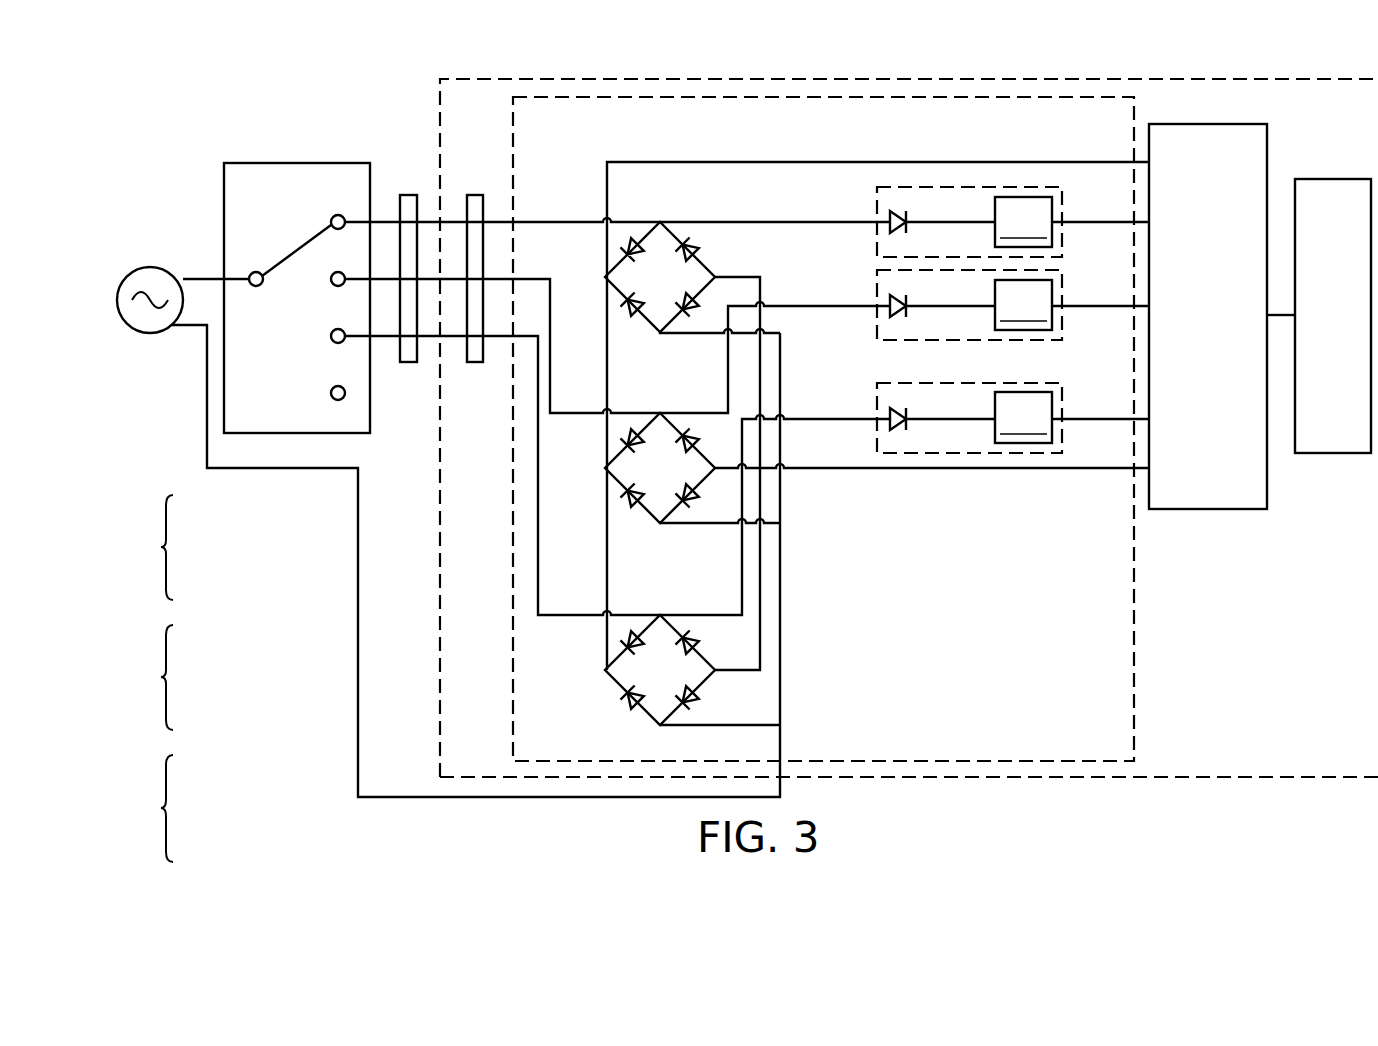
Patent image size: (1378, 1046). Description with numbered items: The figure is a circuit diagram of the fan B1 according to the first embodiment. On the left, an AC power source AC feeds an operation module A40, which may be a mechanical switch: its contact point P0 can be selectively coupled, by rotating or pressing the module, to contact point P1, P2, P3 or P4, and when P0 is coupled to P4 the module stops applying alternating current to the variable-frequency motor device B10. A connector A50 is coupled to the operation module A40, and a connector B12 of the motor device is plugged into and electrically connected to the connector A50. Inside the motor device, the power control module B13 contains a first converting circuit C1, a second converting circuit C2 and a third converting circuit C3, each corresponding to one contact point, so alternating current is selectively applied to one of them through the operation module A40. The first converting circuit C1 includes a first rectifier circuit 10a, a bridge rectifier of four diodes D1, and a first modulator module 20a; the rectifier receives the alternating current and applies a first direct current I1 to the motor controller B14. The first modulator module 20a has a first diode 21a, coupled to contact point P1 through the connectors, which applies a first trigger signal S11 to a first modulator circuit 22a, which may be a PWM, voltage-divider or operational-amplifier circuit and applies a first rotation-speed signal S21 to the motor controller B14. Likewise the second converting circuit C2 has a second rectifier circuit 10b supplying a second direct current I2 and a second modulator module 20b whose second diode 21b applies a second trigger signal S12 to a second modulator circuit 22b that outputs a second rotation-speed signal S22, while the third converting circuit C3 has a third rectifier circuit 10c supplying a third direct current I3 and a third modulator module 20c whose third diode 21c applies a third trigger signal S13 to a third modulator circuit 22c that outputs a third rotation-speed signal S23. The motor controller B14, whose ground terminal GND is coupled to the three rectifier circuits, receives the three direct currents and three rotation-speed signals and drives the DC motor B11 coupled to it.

The fan B1 is at (167, 97).
The variable-frequency motor device B10 is at (1342, 780).
The power control module B13 is at (1138, 695).
The motor controller B14 is at (1236, 334).
The DC motor B11 is at (1364, 334).
The connector B12 is at (475, 195).
The operation module A40 is at (297, 163).
The connector A50 is at (407, 195).
The AC power source AC is at (150, 267).
The contact point P0 is at (256, 272).
The contact point P1 is at (332, 218).
The contact point P2 is at (332, 285).
The contact point P3 is at (332, 342).
The contact point P4 is at (332, 399).
The first direct current I1 is at (592, 150).
The second direct current I2 is at (593, 335).
The third direct current I3 is at (593, 524).
The diode D1 is at (641, 255).
The first rectifier circuit 10a is at (638, 341).
The second rectifier circuit 10b is at (638, 531).
The third rectifier circuit 10c is at (612, 699).
The first modulator module 20a is at (973, 214).
The second modulator module 20b is at (967, 304).
The third modulator module 20c is at (973, 408).
The first diode 21a is at (877, 244).
The second diode 21b is at (877, 326).
The third diode 21c is at (877, 439).
The first trigger signal S11 is at (922, 219).
The second trigger signal S12 is at (922, 302).
The third trigger signal S13 is at (922, 416).
The first modulator circuit 22a is at (1072, 222).
The second modulator circuit 22b is at (1072, 305).
The third modulator circuit 22c is at (1072, 417).
The first rotation-speed signal S21 is at (1096, 220).
The second rotation-speed signal S22 is at (1096, 303).
The third rotation-speed signal S23 is at (1096, 416).
The ground terminal GND is at (1193, 466).
The first converting circuit C1 is at (177, 547).
The second converting circuit C2 is at (177, 677).
The third converting circuit C3 is at (176, 808).